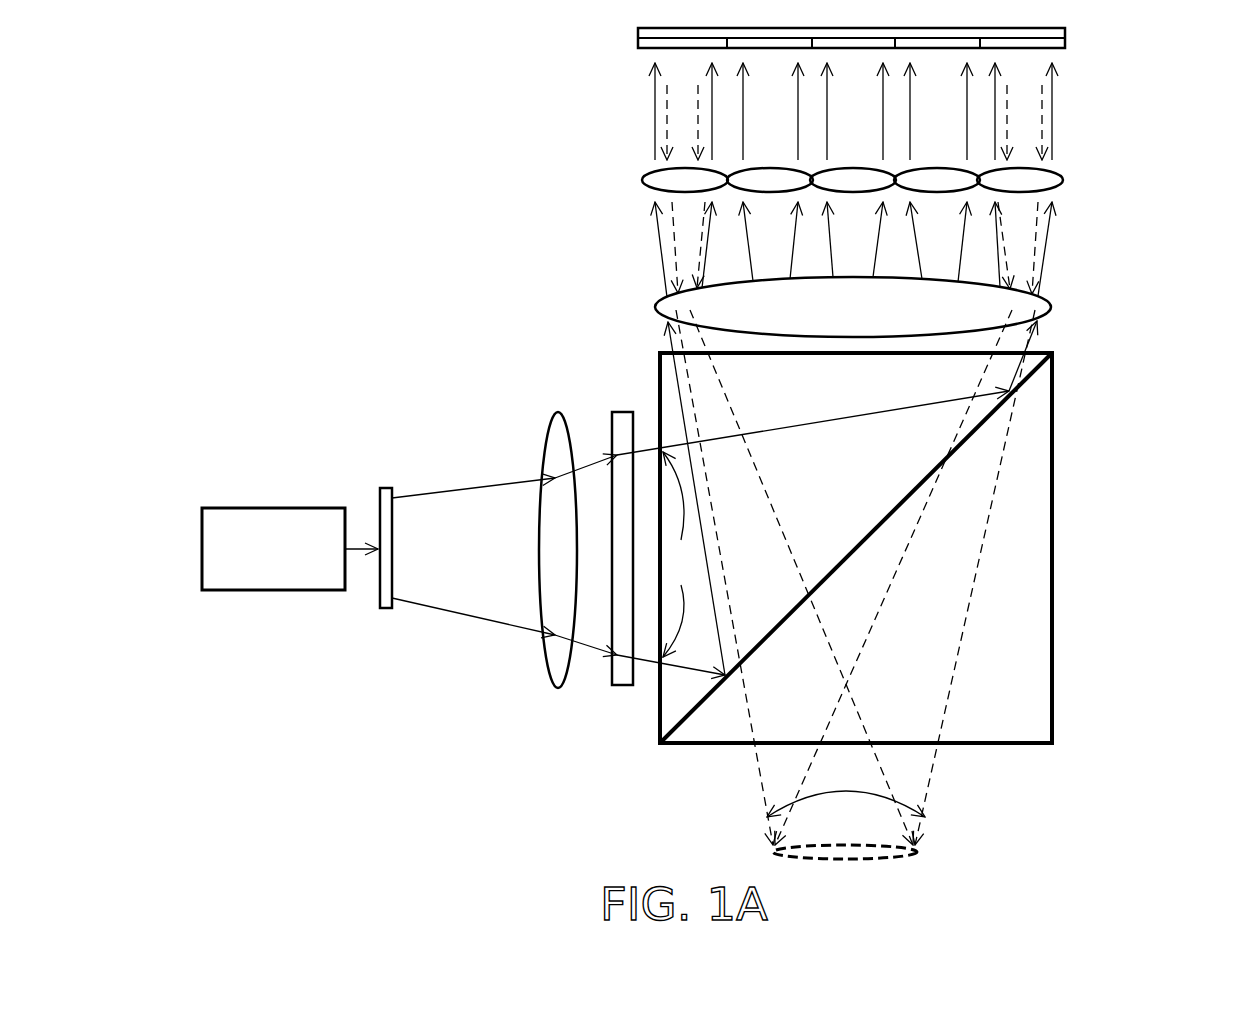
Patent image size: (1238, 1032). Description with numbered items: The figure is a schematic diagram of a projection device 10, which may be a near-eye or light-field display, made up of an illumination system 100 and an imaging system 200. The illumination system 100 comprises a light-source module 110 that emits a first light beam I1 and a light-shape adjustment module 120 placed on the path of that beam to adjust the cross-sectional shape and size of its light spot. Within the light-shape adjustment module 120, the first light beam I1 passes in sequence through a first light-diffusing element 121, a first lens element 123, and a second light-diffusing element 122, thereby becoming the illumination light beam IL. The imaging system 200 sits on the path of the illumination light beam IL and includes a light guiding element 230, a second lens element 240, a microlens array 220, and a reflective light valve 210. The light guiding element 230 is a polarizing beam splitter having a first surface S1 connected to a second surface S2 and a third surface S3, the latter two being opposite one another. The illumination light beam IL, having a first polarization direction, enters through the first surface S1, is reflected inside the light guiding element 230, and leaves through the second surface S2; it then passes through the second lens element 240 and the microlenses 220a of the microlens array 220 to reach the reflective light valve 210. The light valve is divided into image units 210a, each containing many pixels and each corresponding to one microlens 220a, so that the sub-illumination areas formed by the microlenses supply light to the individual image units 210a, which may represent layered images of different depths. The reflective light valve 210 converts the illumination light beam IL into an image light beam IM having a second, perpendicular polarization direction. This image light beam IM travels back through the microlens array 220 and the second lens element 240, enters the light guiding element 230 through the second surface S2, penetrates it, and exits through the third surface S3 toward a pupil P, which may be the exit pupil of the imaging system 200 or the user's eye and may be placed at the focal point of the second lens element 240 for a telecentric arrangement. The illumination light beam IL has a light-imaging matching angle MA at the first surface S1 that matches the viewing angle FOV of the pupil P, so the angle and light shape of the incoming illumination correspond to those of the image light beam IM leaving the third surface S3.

The projection device 10 is at (1185, 859).
The illumination system 100 is at (213, 42).
The light-source module 110 is at (272, 515).
The light-shape adjustment module 120 is at (153, 350).
The first light-diffusing element 121 is at (385, 487).
The second light-diffusing element 122 is at (620, 412).
The first lens element 123 is at (555, 412).
The imaging system 200 is at (213, 105).
The reflective light valve 210 is at (1085, 43).
The image units 210a is at (851, 38).
The microlens array 220 is at (1082, 182).
The microlenses 220a is at (852, 180).
The light guiding element 230 is at (1074, 474).
The second lens element 240 is at (1074, 308).
The first surface S1 is at (657, 723).
The second surface S2 is at (1056, 350).
The third surface S3 is at (1025, 747).
The illumination light beam IL is at (654, 100).
The image light beam IM is at (667, 133).
The first light beam I1 is at (357, 552).
The light-imaging matching angle MA is at (681, 554).
The viewing angle FOV is at (846, 787).
The pupil P is at (885, 861).